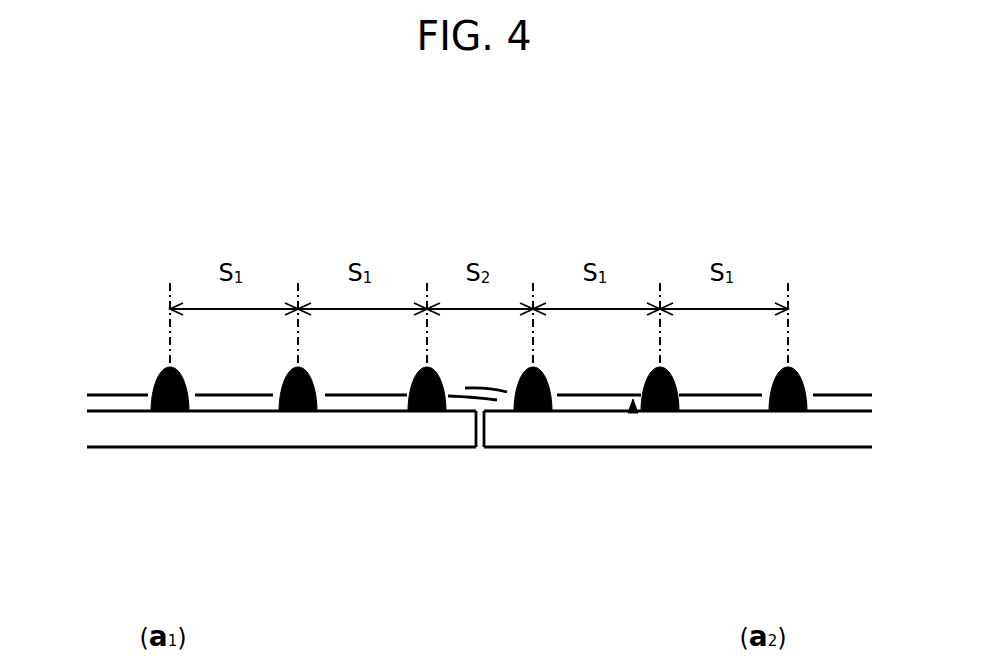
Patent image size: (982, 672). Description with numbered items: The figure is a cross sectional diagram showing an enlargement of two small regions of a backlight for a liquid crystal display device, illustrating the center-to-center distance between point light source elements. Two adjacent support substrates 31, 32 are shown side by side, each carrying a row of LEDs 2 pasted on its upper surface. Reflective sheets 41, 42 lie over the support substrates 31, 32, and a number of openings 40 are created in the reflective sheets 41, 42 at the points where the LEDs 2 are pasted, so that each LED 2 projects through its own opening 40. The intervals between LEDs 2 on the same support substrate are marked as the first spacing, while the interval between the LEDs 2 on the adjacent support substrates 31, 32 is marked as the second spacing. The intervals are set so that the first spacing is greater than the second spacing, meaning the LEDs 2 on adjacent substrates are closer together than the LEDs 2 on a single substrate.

The LED 2 is at (425, 408).
The support substrate 31 is at (215, 427).
The support substrate 32 is at (700, 427).
The opening 40 is at (632, 402).
The reflective sheet 41 is at (112, 395).
The reflective sheet 42 is at (488, 387).